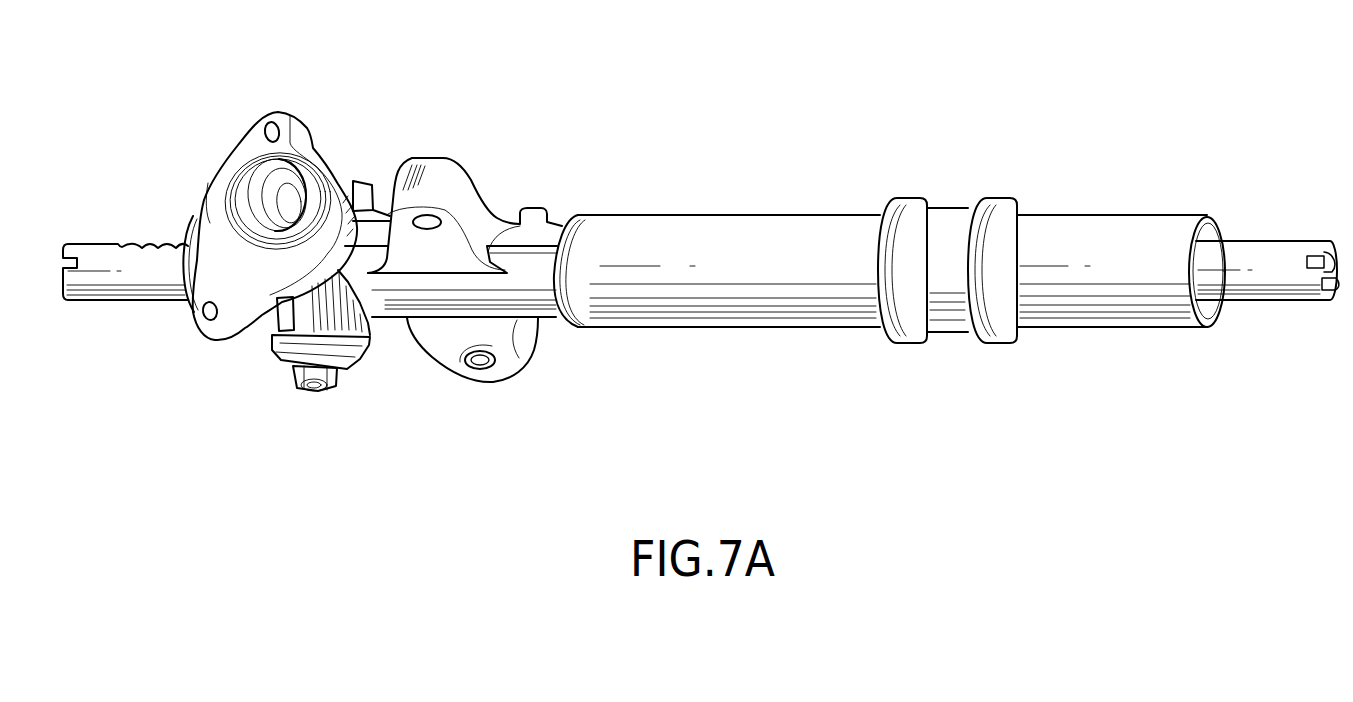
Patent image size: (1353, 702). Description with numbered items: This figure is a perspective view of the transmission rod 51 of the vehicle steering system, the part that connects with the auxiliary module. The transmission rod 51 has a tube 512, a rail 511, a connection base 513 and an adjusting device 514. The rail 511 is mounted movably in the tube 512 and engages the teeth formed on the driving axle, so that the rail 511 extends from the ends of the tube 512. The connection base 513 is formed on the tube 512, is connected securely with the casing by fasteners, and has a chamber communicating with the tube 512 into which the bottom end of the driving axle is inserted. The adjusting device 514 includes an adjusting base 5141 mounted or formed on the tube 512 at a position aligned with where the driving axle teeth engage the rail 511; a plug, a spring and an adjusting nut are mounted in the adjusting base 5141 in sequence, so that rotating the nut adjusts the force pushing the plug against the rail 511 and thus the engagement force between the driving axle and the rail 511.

The transmission rod 51 is at (676, 160).
The rail 511 is at (156, 243).
The tube 512 is at (802, 238).
The connection base 513 is at (298, 128).
The adjusting device 514 is at (329, 372).
The adjusting base 5141 is at (371, 334).